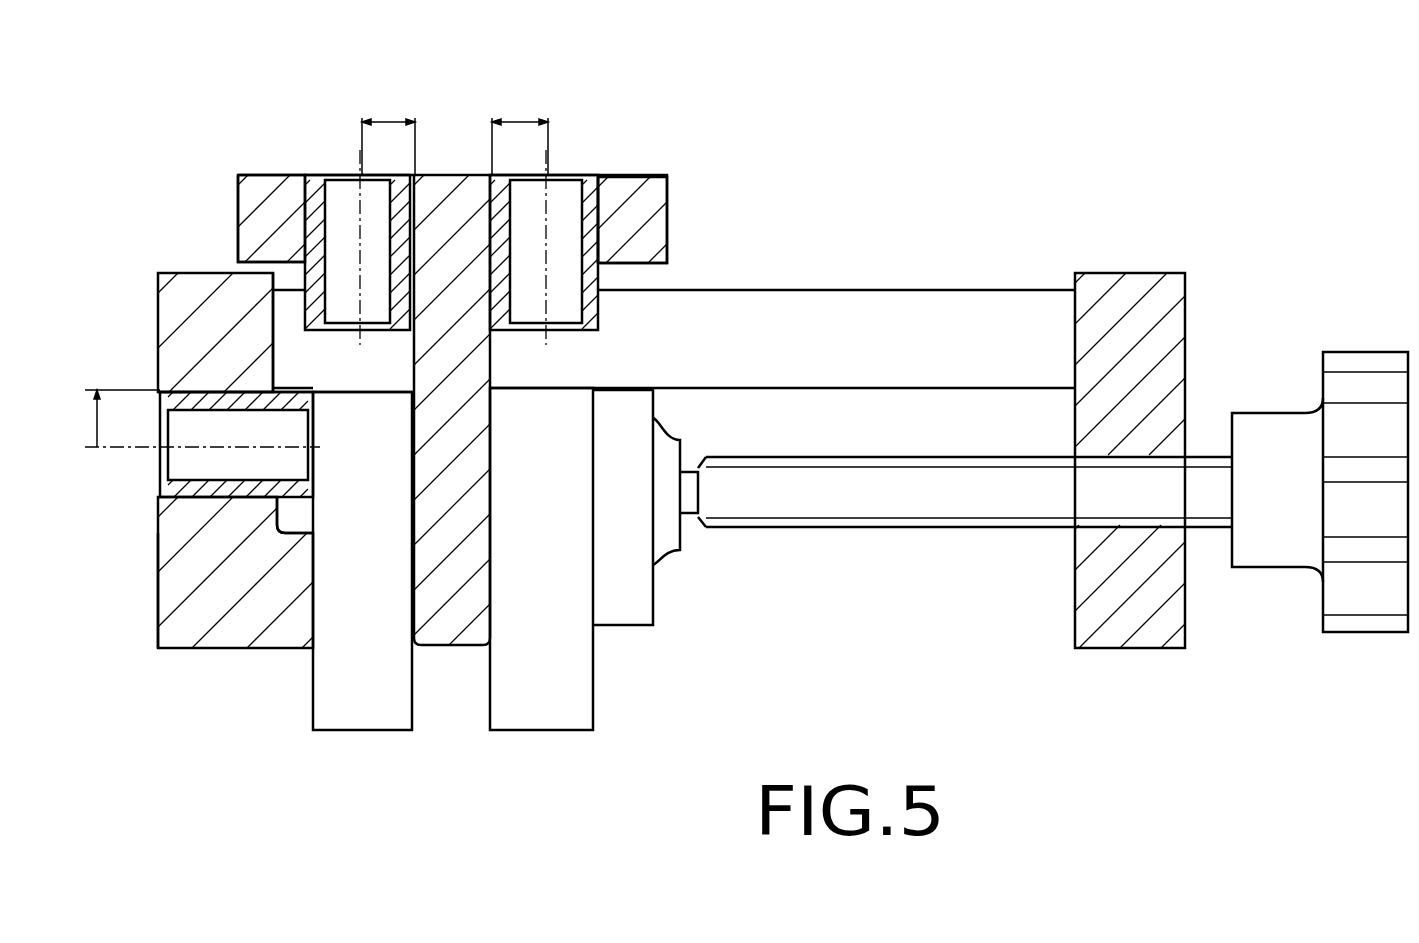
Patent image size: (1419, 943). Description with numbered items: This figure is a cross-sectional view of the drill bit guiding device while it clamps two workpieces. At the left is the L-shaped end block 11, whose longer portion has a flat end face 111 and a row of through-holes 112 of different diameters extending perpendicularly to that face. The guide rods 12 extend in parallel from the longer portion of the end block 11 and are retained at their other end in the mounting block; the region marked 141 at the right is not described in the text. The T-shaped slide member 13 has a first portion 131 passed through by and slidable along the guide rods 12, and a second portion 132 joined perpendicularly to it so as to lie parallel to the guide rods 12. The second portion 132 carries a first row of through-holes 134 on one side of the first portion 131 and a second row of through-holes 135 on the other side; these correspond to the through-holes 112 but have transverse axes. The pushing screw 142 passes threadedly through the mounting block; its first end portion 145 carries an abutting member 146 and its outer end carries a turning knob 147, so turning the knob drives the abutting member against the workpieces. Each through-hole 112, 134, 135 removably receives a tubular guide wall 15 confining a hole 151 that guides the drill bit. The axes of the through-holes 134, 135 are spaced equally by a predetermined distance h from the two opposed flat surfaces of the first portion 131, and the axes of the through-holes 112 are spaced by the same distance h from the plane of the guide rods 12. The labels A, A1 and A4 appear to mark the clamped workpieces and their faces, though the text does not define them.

The L-shaped end block 11 is at (190, 302).
The guide rods 12 is at (925, 300).
The T-shaped slide member 13 is at (645, 178).
The tubular guide wall 15 is at (313, 175).
The flat end face 111 is at (313, 597).
The through-holes 112 is at (193, 390).
The first portion 131 is at (447, 630).
The second portion 132 is at (640, 195).
The first row of through-holes 134 is at (275, 175).
The second row of through-holes 135 is at (600, 243).
The end block 141 is at (1125, 285).
The pushing screw 142 is at (930, 530).
The first end portion 145 is at (688, 500).
The abutting member 146 is at (627, 610).
The turning knob 147 is at (1365, 350).
The hole 151 is at (345, 190).
The guide post A is at (370, 712).
The post top face A1 is at (355, 388).
The base block side face A4 is at (160, 565).
The predetermined distance h is at (309, 266).